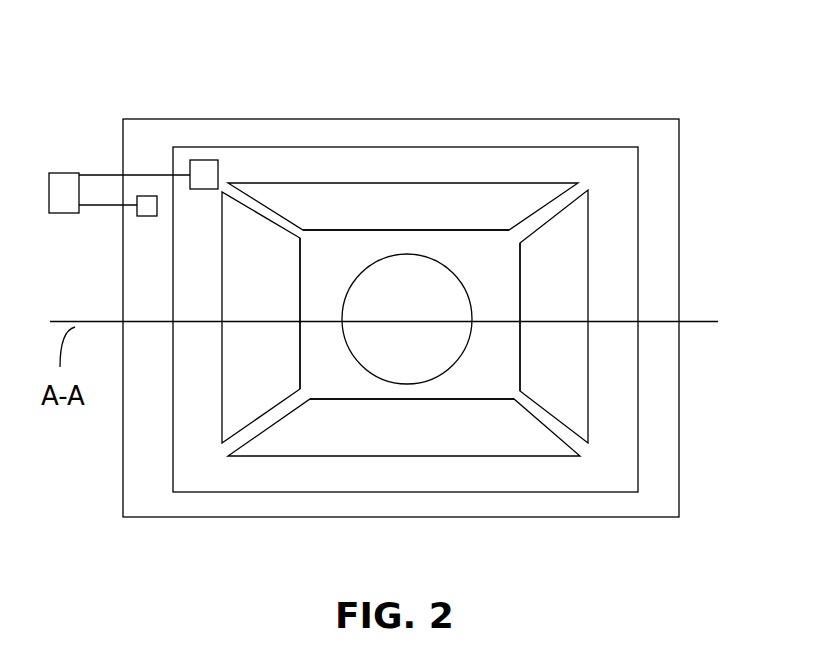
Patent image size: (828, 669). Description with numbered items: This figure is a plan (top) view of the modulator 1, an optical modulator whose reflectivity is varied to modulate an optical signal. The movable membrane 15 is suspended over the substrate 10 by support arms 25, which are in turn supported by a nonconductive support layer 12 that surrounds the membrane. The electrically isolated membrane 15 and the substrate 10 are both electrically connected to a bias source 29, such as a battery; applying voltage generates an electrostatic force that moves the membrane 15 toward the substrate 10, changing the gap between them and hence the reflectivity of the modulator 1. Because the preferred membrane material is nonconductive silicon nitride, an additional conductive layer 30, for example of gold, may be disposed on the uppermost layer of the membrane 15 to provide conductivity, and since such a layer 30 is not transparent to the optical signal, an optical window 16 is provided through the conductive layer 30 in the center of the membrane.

The modulator 1 is at (671, 82).
The substrate 10 is at (187, 127).
The nonconductive support layer 12 is at (409, 320).
The membrane 15 is at (333, 387).
The optical window 16 is at (392, 280).
The support arms 25 is at (234, 200).
The bias source 29 is at (57, 203).
The conductive layer 30 is at (333, 258).